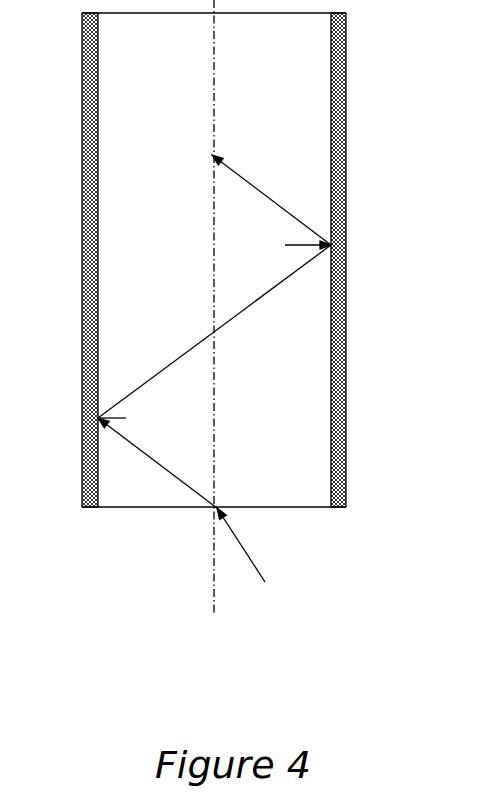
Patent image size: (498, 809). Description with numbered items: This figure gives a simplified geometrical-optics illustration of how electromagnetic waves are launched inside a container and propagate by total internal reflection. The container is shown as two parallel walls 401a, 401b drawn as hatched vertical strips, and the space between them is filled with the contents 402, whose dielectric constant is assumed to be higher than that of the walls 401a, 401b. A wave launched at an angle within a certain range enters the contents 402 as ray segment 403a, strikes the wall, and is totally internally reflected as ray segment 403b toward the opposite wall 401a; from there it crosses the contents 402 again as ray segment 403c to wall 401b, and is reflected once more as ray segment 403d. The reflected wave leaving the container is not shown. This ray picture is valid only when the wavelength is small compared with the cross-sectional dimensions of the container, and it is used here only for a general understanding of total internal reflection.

The container wall 401a is at (67, 260).
The container wall 401b is at (362, 260).
The contents of the container 402 is at (214, 317).
The ray segment 403a is at (260, 550).
The ray segment 403b is at (157, 463).
The ray segment 403c is at (214, 329).
The ray segment 403d is at (271, 200).